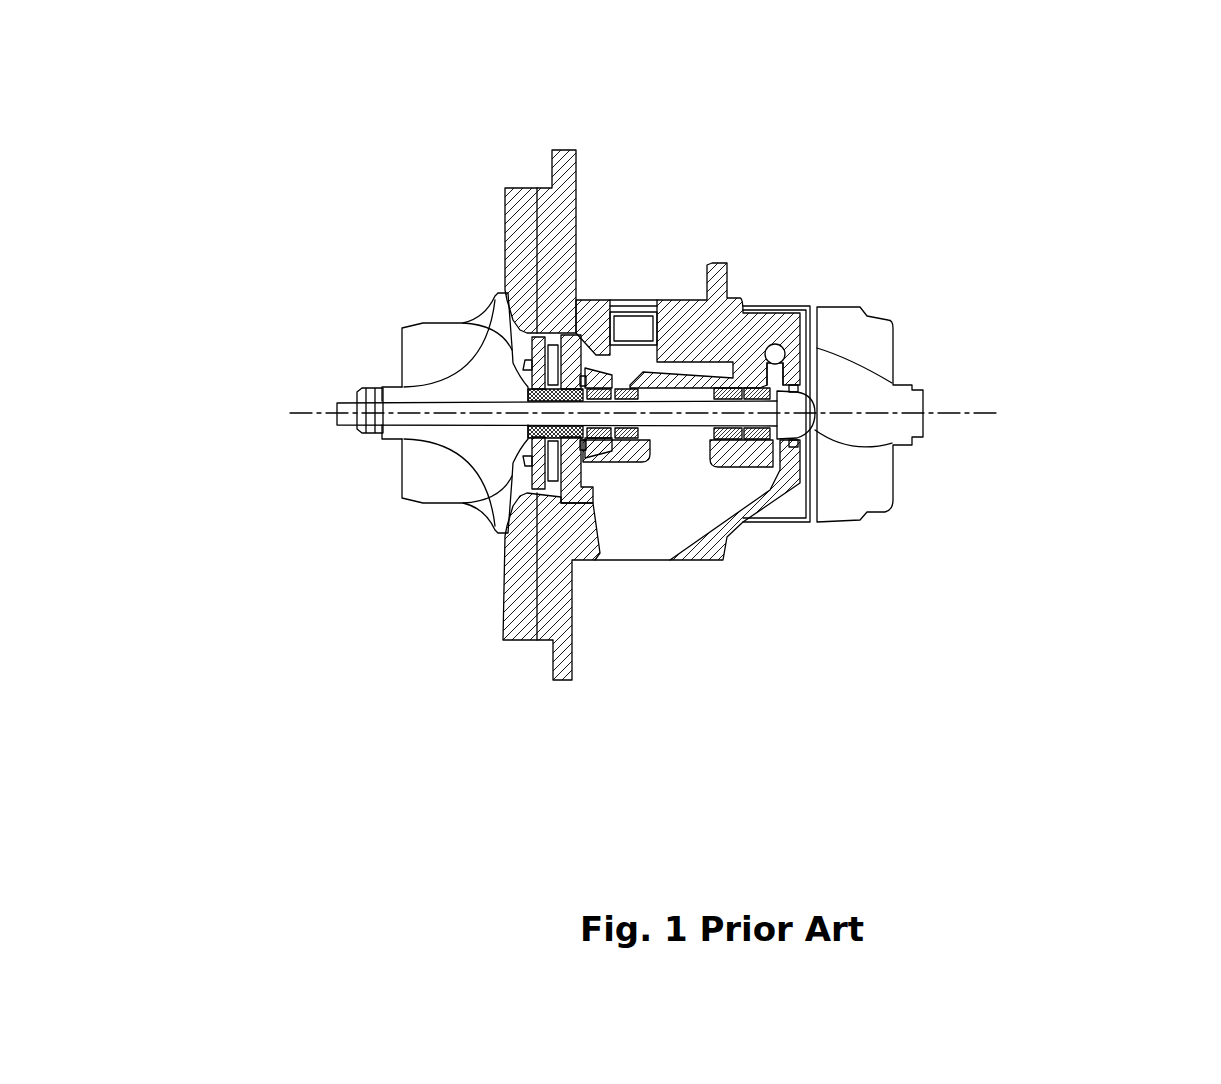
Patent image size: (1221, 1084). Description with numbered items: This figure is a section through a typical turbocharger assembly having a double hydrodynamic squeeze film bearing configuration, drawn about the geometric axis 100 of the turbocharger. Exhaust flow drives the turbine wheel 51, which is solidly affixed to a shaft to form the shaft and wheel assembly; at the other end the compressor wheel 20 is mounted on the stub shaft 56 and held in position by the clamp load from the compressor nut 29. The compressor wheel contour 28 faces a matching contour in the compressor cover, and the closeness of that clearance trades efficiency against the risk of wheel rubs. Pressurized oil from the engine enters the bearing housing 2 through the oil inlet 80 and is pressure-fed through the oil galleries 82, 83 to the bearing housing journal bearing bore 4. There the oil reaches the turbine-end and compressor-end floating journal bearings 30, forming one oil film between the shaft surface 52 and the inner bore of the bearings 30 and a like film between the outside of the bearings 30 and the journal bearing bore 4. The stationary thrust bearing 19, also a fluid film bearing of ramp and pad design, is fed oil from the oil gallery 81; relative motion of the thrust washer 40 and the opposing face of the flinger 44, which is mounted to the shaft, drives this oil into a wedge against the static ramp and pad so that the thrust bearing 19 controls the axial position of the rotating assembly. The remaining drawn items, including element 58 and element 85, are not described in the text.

The bearing housing 2 is at (707, 295).
The bearing housing journal bearing bore 4 is at (590, 358).
The thrust bearing 19 is at (512, 532).
The compressor wheel 20 is at (457, 453).
The compressor wheel contour 28 is at (563, 490).
The compressor nut 29 is at (362, 433).
The floating journal bearings 30 is at (797, 447).
The thrust washer 40 is at (590, 440).
The flinger 44 is at (527, 433).
The turbine wheel 51 is at (840, 383).
The shaft surface 52 is at (343, 410).
The stub shaft 56 is at (473, 403).
The turbine blades 58 is at (870, 447).
The oil inlet 80 is at (623, 322).
The oil gallery 81 is at (632, 385).
The oil gallery 82 is at (742, 385).
The oil gallery 83 is at (613, 372).
The heat shield 85 is at (640, 547).
The geometric axis 100 is at (970, 420).